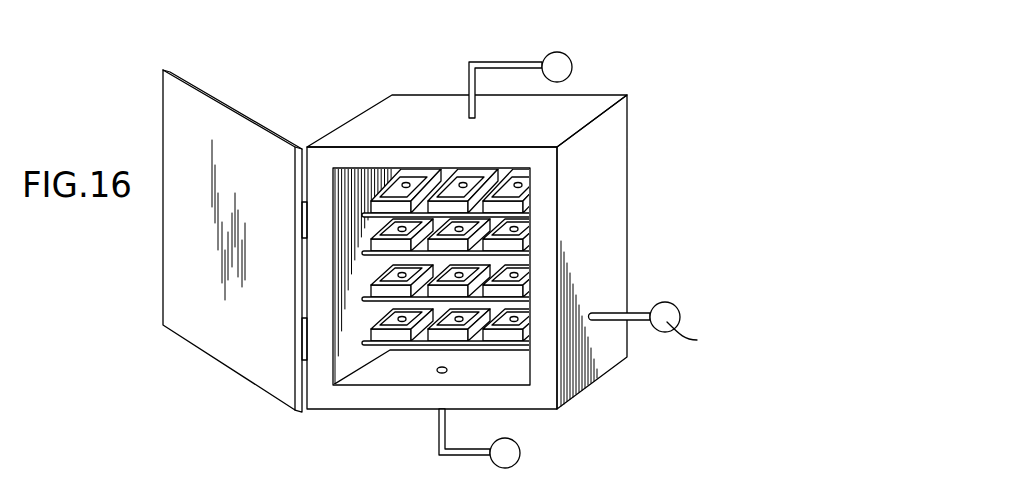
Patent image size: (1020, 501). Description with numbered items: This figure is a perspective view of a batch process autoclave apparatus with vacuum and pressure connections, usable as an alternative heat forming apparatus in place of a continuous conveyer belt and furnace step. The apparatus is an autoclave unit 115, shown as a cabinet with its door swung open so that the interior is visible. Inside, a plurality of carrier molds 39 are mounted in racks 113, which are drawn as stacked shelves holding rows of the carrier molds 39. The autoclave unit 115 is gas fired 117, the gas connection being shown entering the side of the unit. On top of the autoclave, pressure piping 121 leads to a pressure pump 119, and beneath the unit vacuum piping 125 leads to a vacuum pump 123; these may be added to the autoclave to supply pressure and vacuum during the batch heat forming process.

The carrier molds 39 is at (385, 338).
The racks 113 is at (485, 347).
The autoclave unit 115 is at (502, 252).
The gas fired 117 is at (668, 302).
The pressure pump 119 is at (568, 55).
The pressure piping 121 is at (484, 62).
The vacuum pump 123 is at (520, 453).
The vacuum piping 125 is at (448, 463).